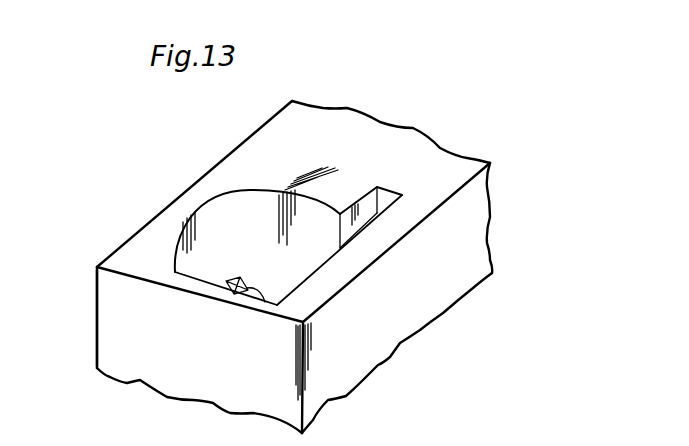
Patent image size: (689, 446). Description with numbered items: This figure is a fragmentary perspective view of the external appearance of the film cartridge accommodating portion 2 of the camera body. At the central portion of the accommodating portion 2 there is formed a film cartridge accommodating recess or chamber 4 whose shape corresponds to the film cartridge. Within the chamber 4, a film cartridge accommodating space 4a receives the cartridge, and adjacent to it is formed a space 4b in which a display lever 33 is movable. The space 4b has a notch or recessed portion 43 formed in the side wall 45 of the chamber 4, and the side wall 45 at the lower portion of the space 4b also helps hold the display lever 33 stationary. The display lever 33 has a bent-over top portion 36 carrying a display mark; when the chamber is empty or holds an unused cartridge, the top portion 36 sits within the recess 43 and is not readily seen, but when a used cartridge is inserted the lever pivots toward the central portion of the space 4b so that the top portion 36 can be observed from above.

The film cartridge accommodating portion 2 is at (250, 157).
The film cartridge accommodating recess 4 is at (281, 193).
The film cartridge accommodating space 4a is at (299, 267).
The space 4b is at (212, 272).
The top portion 36 is at (233, 279).
The display lever 33 is at (262, 293).
The recessed portion 43 is at (316, 318).
The side wall 45 is at (123, 308).